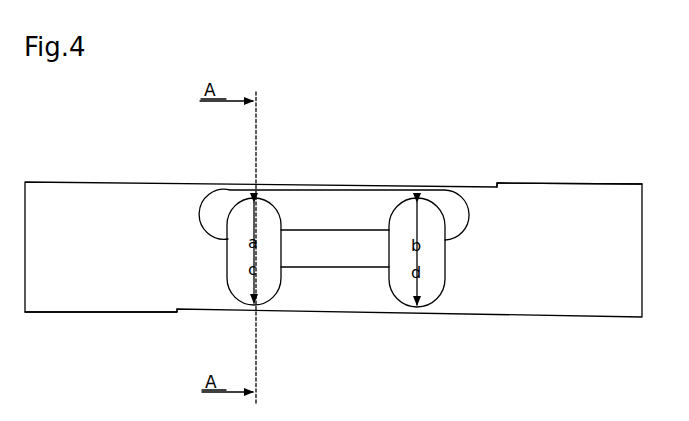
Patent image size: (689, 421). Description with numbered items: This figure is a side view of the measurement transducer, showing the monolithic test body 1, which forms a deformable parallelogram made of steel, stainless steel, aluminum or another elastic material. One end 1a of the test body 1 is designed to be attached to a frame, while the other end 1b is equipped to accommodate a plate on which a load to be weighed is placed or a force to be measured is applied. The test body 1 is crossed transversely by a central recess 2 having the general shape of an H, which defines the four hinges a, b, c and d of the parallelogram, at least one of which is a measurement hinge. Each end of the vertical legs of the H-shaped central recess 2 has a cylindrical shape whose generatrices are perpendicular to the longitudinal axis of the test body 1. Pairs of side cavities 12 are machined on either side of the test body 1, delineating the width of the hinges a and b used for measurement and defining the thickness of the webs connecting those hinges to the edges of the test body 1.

The monolithic test body 1 is at (617, 296).
The end of test body attached to frame 1a is at (120, 314).
The end of test body accommodating plate 1b is at (589, 182).
The central recess 2 is at (330, 257).
The side cavities 12 is at (207, 216).